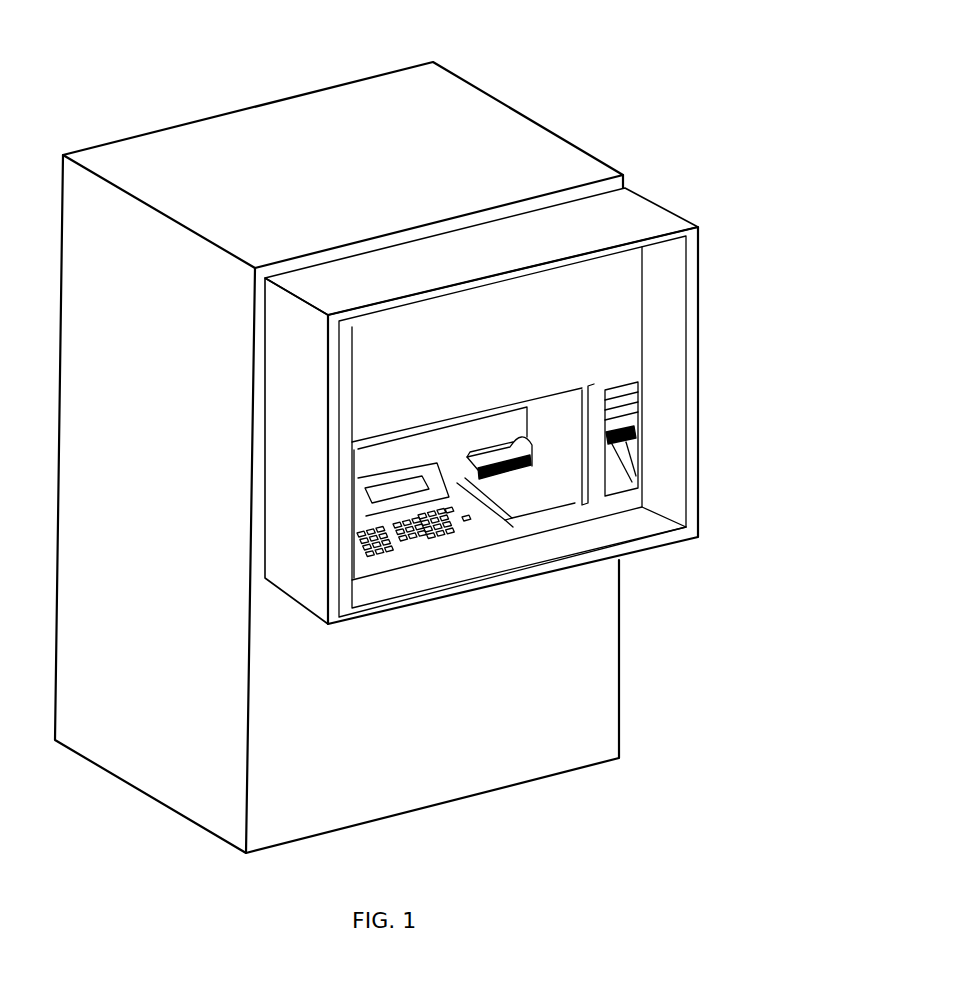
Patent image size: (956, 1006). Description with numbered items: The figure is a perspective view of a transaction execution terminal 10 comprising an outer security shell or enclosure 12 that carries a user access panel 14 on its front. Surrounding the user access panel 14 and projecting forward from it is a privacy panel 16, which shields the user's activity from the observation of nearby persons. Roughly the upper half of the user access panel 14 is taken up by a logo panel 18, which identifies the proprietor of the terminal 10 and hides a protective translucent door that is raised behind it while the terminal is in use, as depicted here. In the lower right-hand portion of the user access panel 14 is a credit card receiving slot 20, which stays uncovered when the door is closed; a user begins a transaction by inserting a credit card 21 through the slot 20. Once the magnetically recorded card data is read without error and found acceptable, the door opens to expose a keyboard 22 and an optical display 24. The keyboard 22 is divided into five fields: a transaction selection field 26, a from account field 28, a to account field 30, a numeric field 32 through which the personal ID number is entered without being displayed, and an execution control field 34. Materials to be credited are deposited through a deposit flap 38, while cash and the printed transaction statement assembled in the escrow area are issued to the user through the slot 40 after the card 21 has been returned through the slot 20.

The transaction execution terminal 10 is at (519, 97).
The outer security shell or enclosure 12 is at (590, 670).
The user access panel 14 is at (734, 334).
The privacy panel 16 is at (698, 497).
The logo panel 18 is at (622, 277).
The credit card receiving slot 20 is at (626, 432).
The credit card 21 is at (624, 458).
The keyboard 22 is at (415, 575).
The optical display 24 is at (368, 490).
The transaction selection field 26 is at (372, 549).
The from account field 28 is at (402, 541).
The to account field 30 is at (430, 536).
The numeric field 32 is at (453, 513).
The execution control field 34 is at (472, 521).
The deposit flap 38 is at (528, 437).
The slot 40 is at (488, 502).